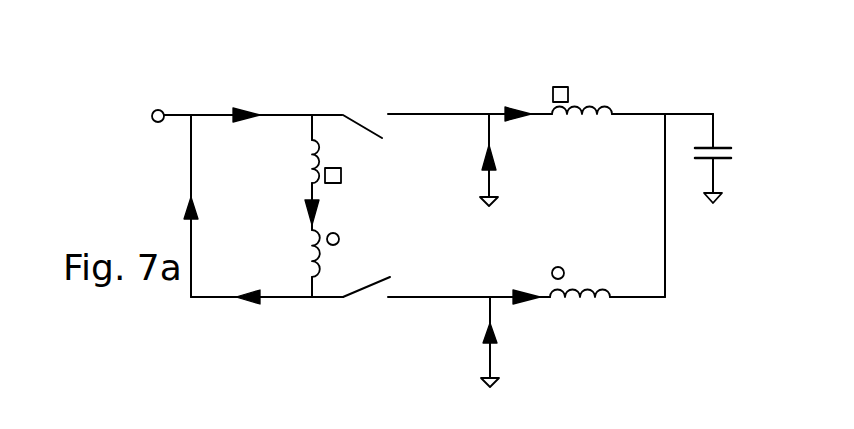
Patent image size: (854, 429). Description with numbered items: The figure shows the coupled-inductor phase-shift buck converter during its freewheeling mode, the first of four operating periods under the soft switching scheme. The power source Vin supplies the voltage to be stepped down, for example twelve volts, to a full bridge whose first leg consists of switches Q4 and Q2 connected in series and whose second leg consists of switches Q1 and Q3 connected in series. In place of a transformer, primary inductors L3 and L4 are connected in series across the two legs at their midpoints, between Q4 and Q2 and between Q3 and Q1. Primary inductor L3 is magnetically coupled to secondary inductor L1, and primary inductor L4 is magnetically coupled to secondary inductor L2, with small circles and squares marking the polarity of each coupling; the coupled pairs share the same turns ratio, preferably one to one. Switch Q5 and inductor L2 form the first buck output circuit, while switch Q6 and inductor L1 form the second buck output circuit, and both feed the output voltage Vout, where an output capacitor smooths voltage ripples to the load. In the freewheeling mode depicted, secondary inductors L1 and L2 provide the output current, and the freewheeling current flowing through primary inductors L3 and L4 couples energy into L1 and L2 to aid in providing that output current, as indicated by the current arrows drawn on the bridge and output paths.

The power source Vin is at (130, 121).
The output voltage Vout is at (706, 144).
The switch Q1 is at (387, 312).
The switch Q2 is at (362, 112).
The switch Q3 is at (366, 305).
The switch Q4 is at (382, 104).
The switch Q5 is at (510, 160).
The switch Q6 is at (507, 342).
The secondary inductor L1 is at (582, 97).
The secondary inductor L2 is at (580, 279).
The primary inductor L3 is at (306, 165).
The primary inductor L4 is at (306, 256).